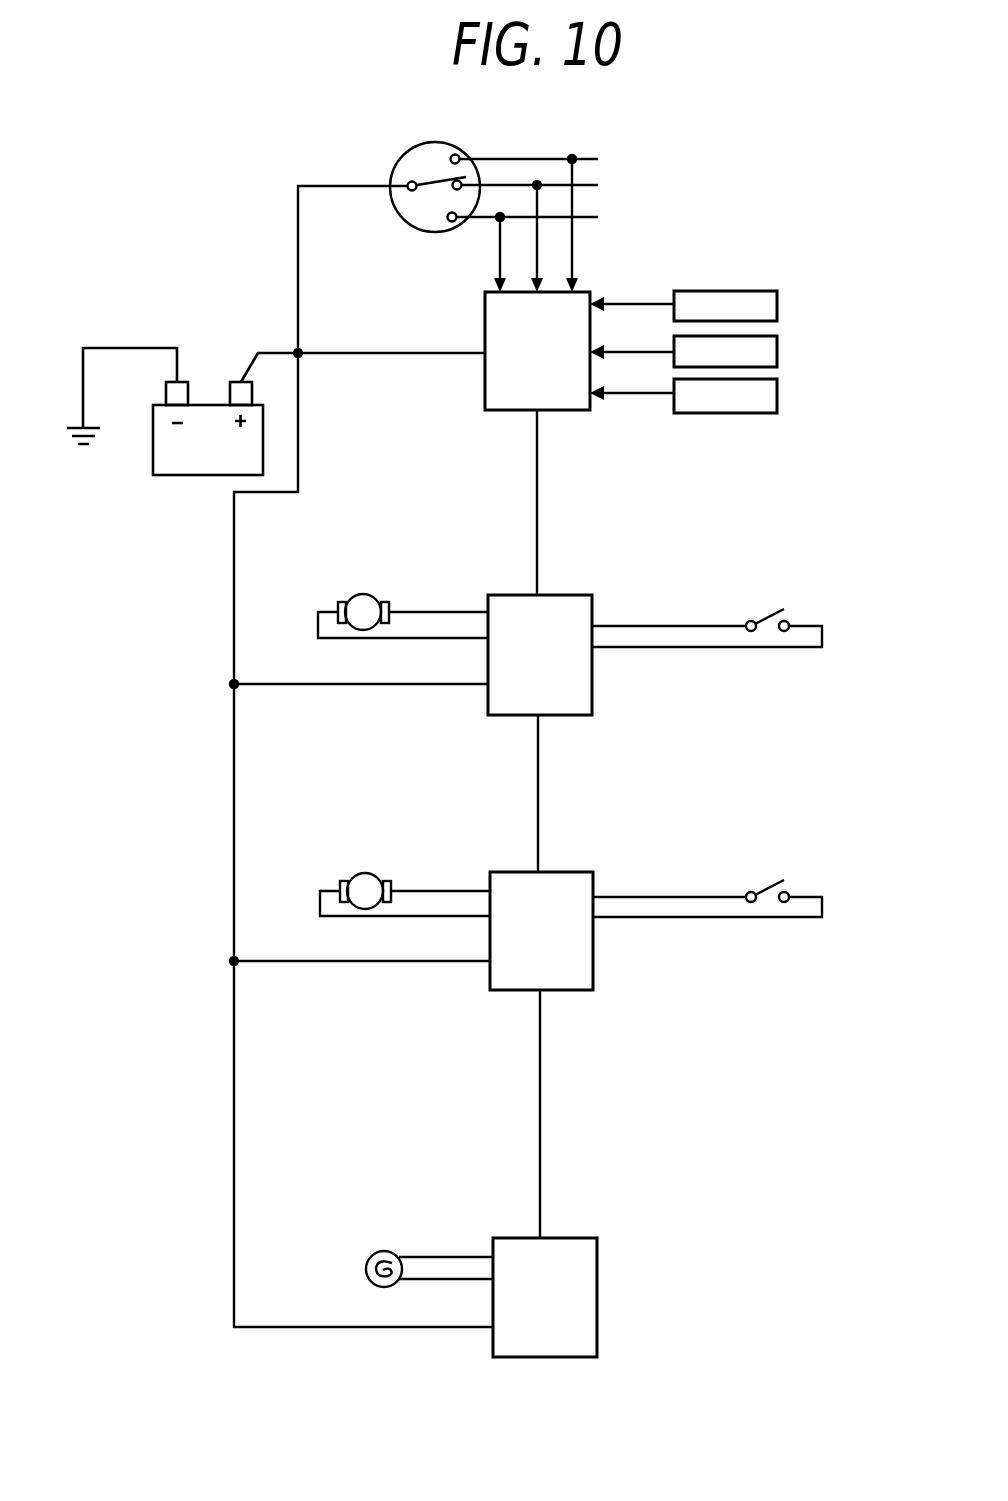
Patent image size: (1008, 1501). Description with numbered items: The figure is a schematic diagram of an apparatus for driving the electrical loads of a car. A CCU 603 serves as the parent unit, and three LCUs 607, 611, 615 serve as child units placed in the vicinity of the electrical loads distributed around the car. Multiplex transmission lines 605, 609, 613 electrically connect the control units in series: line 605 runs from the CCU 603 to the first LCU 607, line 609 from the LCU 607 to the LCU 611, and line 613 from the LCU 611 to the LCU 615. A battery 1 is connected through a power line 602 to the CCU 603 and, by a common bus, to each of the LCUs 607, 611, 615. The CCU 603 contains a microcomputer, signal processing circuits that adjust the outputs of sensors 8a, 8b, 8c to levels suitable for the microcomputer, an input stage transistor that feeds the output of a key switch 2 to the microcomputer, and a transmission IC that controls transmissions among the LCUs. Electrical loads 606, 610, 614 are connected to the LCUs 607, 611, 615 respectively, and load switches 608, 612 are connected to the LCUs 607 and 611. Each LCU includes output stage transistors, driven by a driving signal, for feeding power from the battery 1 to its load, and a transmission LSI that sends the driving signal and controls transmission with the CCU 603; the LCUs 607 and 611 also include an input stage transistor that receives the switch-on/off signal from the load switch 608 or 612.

The battery 1 is at (178, 478).
The key switch 2 is at (398, 165).
The sensor 8a is at (778, 302).
The sensor 8b is at (778, 350).
The sensor 8c is at (778, 397).
The power supply line 602 is at (364, 352).
The CCU (Central Control Unit) 603 is at (583, 292).
The multiplex transmission line 605 is at (538, 520).
The electrical load 606 is at (360, 594).
The LCU (Local Control Unit) 607 is at (568, 595).
The load switch 608 is at (787, 612).
The multiplex transmission line 609 is at (538, 788).
The electrical load 610 is at (357, 872).
The LCU (Local Control Unit) 611 is at (573, 872).
The load switch 612 is at (787, 882).
The multiplex transmission line 613 is at (541, 1147).
The electrical load 614 is at (367, 1265).
The LCU (Local Control Unit) 615 is at (597, 1273).